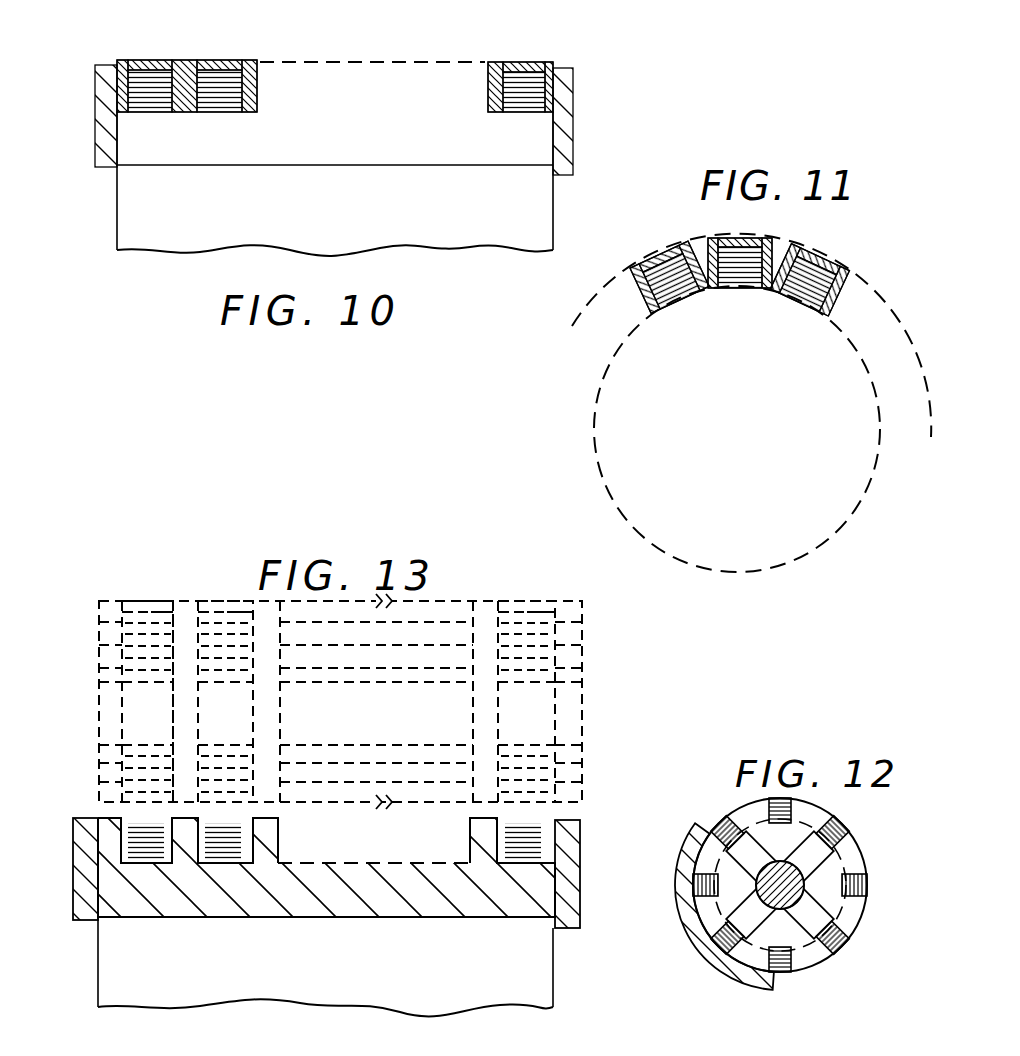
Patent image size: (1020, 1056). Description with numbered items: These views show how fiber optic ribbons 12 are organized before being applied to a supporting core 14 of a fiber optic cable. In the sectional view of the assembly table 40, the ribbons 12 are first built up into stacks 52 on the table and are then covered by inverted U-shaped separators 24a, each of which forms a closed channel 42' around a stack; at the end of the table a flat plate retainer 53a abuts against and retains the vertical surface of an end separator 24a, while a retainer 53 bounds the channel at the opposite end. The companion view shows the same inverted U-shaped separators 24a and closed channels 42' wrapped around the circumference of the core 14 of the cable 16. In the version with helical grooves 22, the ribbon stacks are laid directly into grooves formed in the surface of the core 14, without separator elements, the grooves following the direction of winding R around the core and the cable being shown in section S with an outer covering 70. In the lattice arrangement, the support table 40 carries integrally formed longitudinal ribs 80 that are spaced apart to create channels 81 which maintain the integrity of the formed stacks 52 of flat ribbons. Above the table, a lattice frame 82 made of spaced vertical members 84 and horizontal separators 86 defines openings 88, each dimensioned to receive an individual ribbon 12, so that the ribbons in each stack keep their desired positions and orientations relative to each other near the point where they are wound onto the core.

In FIG. 13, the fiber optic ribbon 12 is at (130, 598).
In FIG. 11, the supporting core 14 is at (636, 536).
In FIG. 12, the supporting core 14 is at (732, 832).
In FIG. 11, the motor 16 is at (560, 500).
In FIG. 12, the motor 16 is at (730, 796).
In FIG. 12, the helical groove 22 is at (840, 832).
In FIG. 10, the inverted U-shaped separator 24a is at (222, 70).
In FIG. 11, the inverted U-shaped separator 24a is at (668, 264).
In FIG. 10, the assembly table 40 is at (100, 258).
In FIG. 13, the assembly table 40 is at (540, 986).
In FIG. 10, the closed channel 42' is at (166, 62).
In FIG. 11, the closed channel 42' is at (779, 250).
In FIG. 13, the ribbon stack 52 is at (540, 858).
In FIG. 10, the retainer 53 is at (568, 160).
In FIG. 10, the flat plate retainer 53a is at (108, 82).
In FIG. 12, the housing 70 is at (698, 940).
In FIG. 13, the longitudinal rib 80 is at (270, 838).
In FIG. 13, the channel 81 is at (128, 821).
In FIG. 13, the lattice frame 82 is at (652, 657).
In FIG. 13, the vertical member 84 is at (265, 618).
In FIG. 13, the horizontal separator 86 is at (428, 625).
In FIG. 13, the opening 88 is at (213, 602).
In FIG. 12, the direction of rotation R is at (885, 832).
In FIG. 12, the south pole S is at (838, 938).